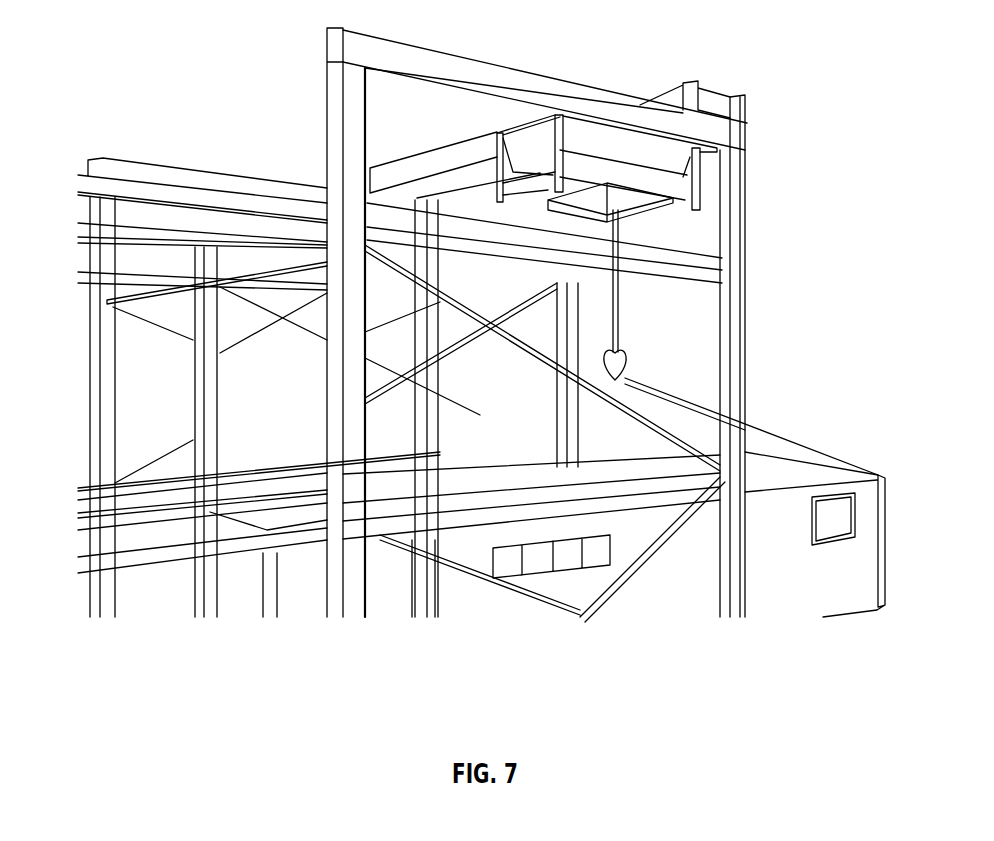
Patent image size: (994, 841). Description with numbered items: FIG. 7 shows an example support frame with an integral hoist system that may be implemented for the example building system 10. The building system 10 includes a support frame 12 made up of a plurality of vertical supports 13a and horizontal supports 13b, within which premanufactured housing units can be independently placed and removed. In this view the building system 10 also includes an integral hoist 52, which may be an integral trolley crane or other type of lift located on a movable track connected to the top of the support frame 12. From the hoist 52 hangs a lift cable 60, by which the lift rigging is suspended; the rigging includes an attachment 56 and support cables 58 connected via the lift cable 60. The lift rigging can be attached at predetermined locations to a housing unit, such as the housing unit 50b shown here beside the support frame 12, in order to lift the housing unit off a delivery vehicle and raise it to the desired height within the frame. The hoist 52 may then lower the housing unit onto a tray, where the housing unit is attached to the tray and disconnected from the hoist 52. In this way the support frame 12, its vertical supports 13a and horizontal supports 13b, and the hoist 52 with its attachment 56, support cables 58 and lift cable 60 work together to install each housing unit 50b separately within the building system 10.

The building system 10 is at (259, 106).
The support frame 12 is at (752, 244).
The vertical supports 13a is at (738, 320).
The horizontal supports 13b is at (645, 490).
The integral hoist 52 is at (607, 140).
The attachment 56 is at (632, 362).
The support cables 58 is at (693, 403).
The lift cable 60 is at (622, 300).
The housing unit 50b is at (823, 589).